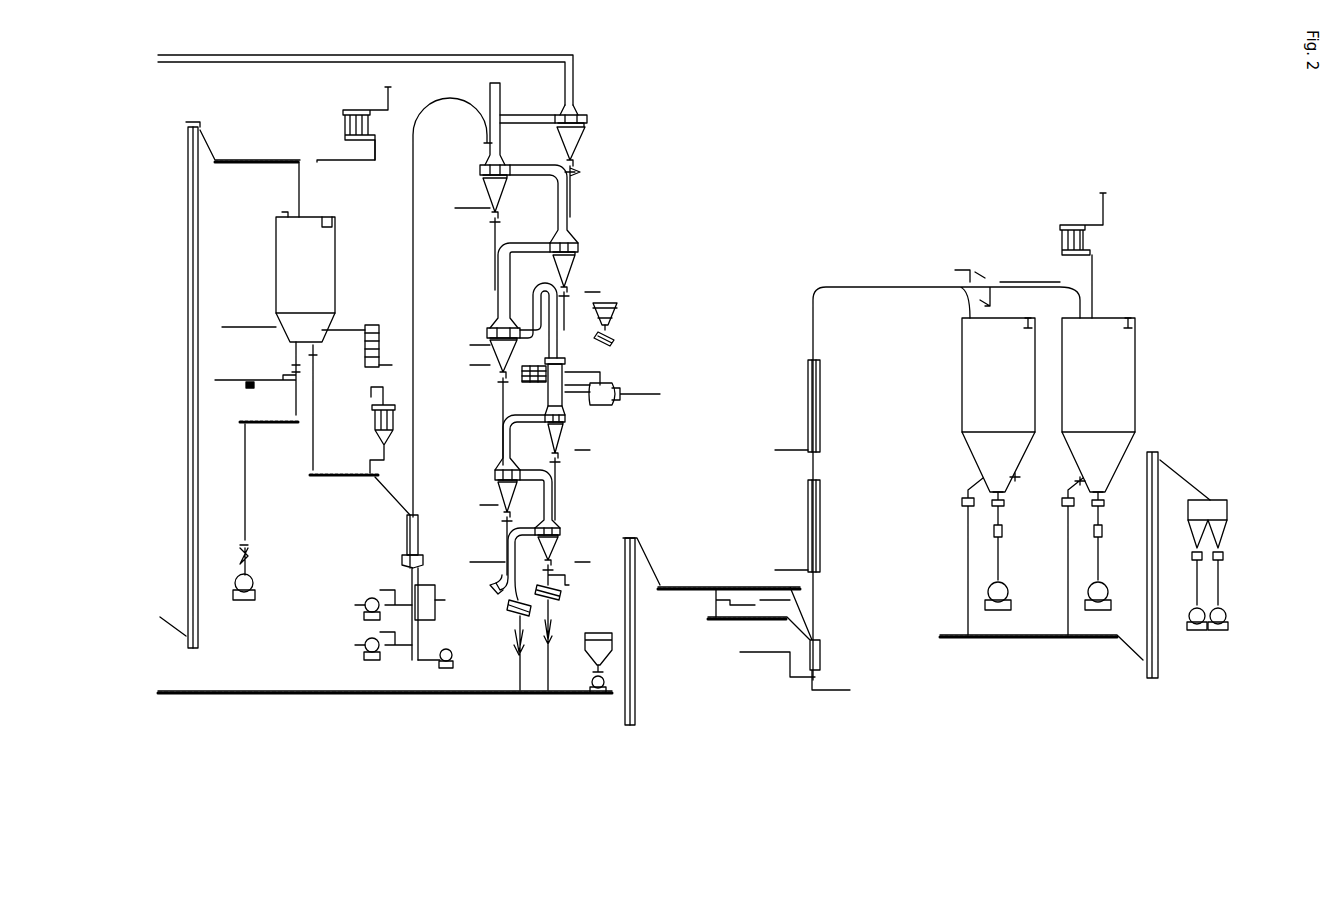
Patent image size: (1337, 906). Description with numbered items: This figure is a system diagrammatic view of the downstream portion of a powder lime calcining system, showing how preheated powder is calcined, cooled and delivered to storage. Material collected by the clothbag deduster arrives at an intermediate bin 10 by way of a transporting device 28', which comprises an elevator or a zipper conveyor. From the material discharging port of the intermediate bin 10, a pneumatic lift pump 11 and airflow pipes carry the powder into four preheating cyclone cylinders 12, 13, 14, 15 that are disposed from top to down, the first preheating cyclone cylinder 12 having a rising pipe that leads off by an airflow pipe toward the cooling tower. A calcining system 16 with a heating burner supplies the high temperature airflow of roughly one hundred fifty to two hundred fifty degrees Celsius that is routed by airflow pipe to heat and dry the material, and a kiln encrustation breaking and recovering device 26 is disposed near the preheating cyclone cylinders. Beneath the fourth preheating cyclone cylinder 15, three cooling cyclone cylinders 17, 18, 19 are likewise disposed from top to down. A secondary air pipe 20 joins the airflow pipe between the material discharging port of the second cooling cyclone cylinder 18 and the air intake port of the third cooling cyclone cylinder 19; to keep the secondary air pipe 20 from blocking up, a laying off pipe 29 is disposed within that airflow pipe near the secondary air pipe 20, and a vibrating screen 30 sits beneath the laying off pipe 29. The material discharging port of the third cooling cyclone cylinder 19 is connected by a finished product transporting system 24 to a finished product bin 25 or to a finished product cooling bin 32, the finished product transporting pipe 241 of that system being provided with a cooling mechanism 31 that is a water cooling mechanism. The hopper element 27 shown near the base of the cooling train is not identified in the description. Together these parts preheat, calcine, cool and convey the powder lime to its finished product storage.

The intermediate bin 10 is at (303, 370).
The pneumatic lift pump 11 is at (410, 535).
The first preheating cyclone cylinder 12 is at (576, 132).
The second preheating cyclone cylinder 13 is at (490, 197).
The third preheating cyclone cylinder 14 is at (563, 265).
The fourth preheating cyclone cylinder 15 is at (500, 350).
The calcining system 16 is at (556, 372).
The first cooling cyclone cylinder 17 is at (556, 440).
The second cooling cyclone cylinder 18 is at (503, 490).
The third cooling cyclone cylinder 19 is at (552, 543).
The secondary air pipe 20 is at (506, 583).
The finished product transporting system 24 is at (632, 706).
The finished product transporting pipe 241 is at (813, 330).
The finished product bin 25 is at (1110, 381).
The kiln encrustation breaking and recovering device 26 is at (620, 310).
The hopper 27 is at (603, 655).
The transporting device 28' is at (216, 385).
The laying off pipe 29 is at (549, 589).
The vibrating screen 30 is at (517, 608).
The cooling mechanism 31 is at (818, 518).
The finished product cooling bin 32 is at (1215, 507).